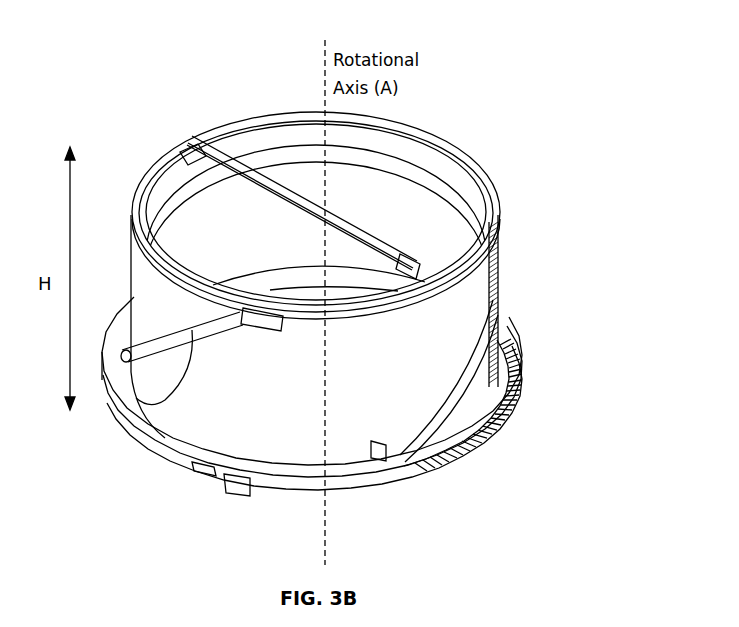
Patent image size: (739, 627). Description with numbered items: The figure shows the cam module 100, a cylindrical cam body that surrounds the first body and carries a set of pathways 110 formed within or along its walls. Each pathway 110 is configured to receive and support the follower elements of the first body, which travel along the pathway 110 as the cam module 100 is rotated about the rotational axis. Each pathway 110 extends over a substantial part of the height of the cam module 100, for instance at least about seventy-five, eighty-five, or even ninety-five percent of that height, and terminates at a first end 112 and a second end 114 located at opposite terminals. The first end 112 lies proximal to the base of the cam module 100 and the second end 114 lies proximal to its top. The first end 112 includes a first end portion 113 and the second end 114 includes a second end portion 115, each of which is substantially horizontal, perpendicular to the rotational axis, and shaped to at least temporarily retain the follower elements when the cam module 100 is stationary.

The cam module 100 is at (511, 153).
The pathway 110 is at (500, 327).
The first end 112 is at (370, 447).
The first end portion 113 is at (408, 258).
The second end 114 is at (187, 162).
The second end portion 115 is at (267, 308).